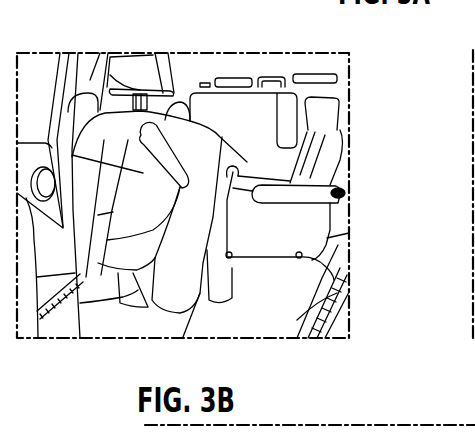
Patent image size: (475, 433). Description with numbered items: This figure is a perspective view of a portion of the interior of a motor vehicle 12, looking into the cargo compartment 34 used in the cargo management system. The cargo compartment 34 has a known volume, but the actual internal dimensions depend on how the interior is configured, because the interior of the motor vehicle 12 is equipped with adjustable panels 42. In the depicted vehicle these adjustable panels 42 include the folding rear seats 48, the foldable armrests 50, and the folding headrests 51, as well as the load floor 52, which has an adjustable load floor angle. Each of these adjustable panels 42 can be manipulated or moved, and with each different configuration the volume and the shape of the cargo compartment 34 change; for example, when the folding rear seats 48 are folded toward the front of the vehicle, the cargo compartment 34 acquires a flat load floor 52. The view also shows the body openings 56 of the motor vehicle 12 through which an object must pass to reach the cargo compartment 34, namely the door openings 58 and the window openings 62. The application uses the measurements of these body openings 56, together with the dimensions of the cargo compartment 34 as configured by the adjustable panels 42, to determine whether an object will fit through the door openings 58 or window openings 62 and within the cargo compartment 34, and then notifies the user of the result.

The motor vehicle 12 is at (304, 66).
The cargo compartment 34 is at (362, 141).
The adjustable panels 42 is at (251, 196).
The folding rear seats 48 is at (97, 110).
The foldable armrests 50 is at (310, 184).
The folding headrests 51 is at (128, 285).
The load floor 52 is at (316, 181).
The window openings 62 is at (226, 109).
The body openings 56 is at (369, 301).
The door openings 58 is at (332, 318).